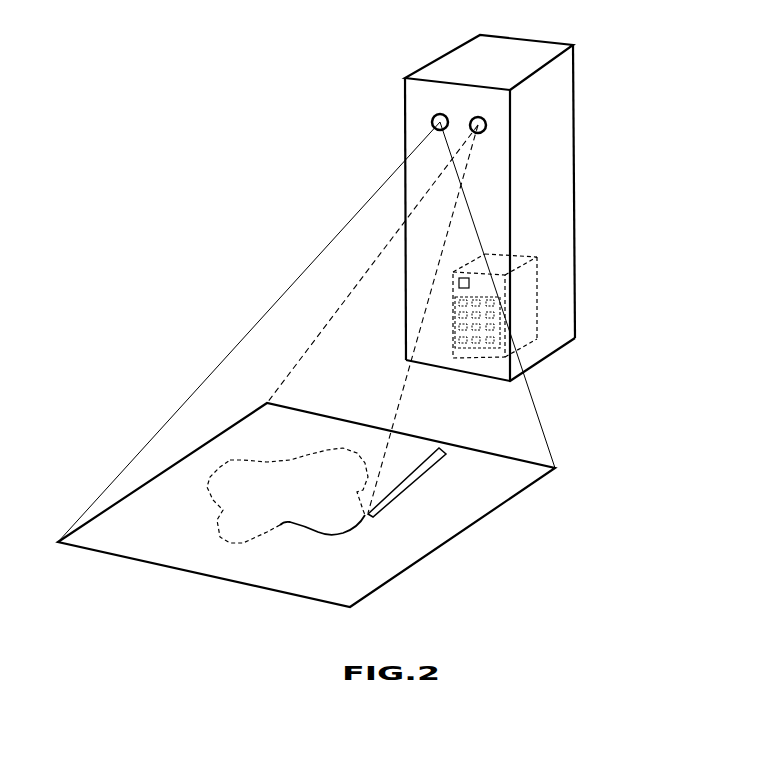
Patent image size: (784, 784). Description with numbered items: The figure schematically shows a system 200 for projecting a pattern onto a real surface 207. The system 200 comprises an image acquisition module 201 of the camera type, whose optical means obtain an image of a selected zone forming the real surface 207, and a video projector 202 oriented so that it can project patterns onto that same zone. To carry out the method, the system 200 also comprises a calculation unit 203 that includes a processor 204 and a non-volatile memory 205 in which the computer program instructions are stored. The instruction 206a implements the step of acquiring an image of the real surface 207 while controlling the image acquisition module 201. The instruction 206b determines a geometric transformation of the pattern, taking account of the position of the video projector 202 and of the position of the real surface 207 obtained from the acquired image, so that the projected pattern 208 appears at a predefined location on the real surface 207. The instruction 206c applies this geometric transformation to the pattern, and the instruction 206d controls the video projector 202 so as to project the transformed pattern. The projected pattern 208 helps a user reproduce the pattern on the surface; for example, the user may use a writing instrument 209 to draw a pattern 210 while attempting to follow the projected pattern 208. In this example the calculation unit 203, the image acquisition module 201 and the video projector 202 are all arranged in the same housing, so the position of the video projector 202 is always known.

The system 200 is at (455, 58).
The image acquisition module 201 is at (431, 122).
The video projector 202 is at (449, 122).
The calculation unit 203 is at (540, 254).
The processor 204 is at (466, 279).
The memory 205 is at (502, 300).
The computer program instruction 206a is at (456, 301).
The computer program instruction 206b is at (456, 313).
The computer program instruction 206c is at (456, 326).
The computer program instruction 206d is at (456, 340).
The real surface 207 is at (68, 546).
The projected pattern 208 is at (220, 515).
The writing instrument 209 is at (417, 487).
The pattern 210 is at (298, 528).